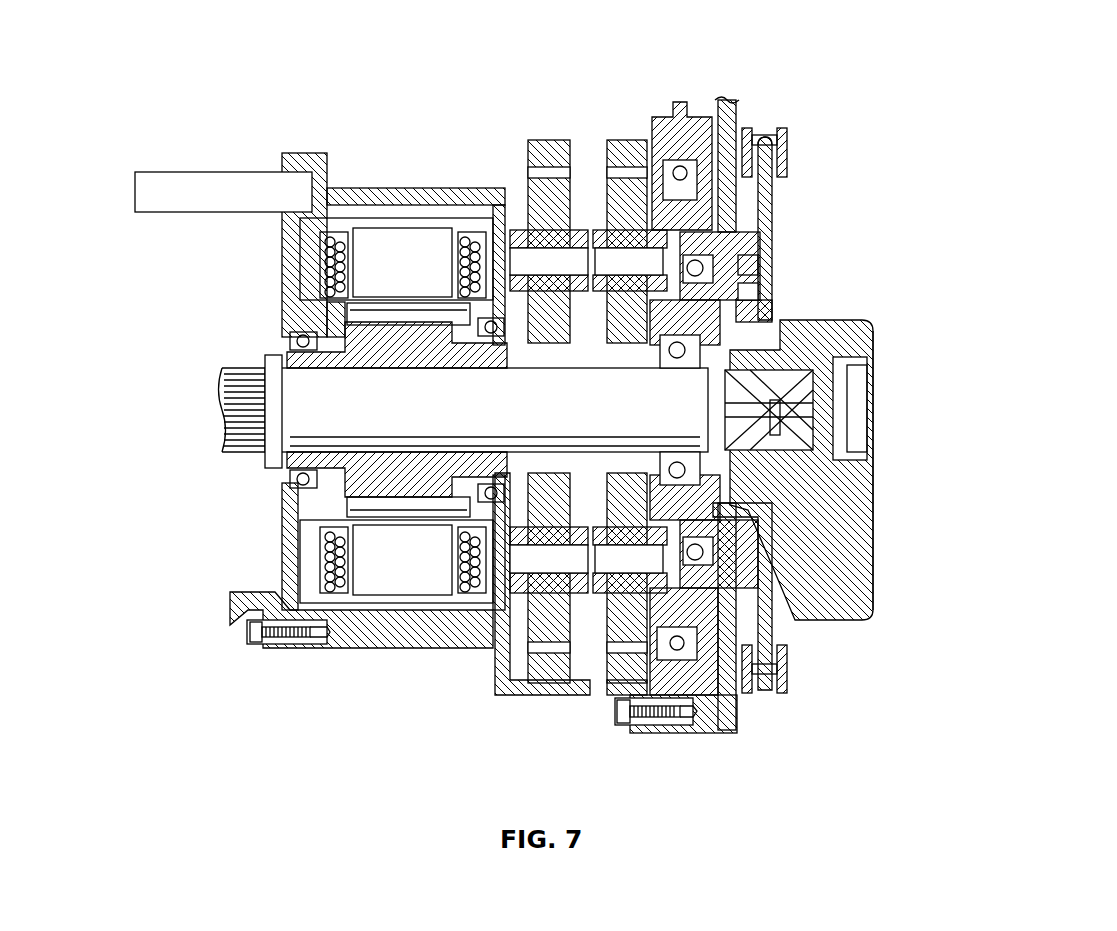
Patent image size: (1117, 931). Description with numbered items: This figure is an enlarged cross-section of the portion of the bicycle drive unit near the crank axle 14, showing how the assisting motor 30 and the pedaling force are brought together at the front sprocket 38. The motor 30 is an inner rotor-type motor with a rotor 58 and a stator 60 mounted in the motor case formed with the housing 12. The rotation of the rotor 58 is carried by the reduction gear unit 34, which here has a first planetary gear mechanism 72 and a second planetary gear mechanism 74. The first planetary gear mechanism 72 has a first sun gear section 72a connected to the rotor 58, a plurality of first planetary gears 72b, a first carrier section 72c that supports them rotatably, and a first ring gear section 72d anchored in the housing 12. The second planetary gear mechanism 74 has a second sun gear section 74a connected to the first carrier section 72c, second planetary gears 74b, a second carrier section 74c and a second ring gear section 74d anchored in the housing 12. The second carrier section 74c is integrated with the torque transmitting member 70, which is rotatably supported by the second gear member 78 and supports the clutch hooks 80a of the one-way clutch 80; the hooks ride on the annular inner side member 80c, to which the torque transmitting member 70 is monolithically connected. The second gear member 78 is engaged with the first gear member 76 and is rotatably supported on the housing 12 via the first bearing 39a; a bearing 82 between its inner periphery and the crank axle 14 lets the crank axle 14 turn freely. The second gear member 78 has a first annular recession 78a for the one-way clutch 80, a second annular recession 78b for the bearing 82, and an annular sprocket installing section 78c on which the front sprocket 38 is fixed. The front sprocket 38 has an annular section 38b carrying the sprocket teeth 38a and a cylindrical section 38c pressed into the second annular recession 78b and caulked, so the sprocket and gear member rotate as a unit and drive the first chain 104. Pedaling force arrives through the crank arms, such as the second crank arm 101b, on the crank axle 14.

The housing 12 is at (760, 142).
The crank axle 14 is at (300, 400).
The motor 30 is at (405, 630).
The reduction gear unit 34 is at (605, 770).
The front sprocket 38 is at (775, 265).
The sprocket teeth 38a is at (775, 140).
The annular section 38b is at (780, 285).
The cylindrical section 38c is at (860, 340).
The first bearing 39a is at (770, 290).
The rotor 58 is at (330, 300).
The stator 60 is at (430, 195).
The torque transmitting member 70 is at (770, 620).
The first planetary gear mechanism 72 is at (545, 670).
The first sun gear section 72a is at (517, 600).
The first planetary gears 72b is at (552, 170).
The first carrier section 72c is at (517, 235).
The first ring gear section 72d is at (545, 665).
The second planetary gear mechanism 74 is at (620, 670).
The second sun gear section 74a is at (840, 440).
The second planetary gears 74b is at (605, 175).
The second carrier section 74c is at (760, 580).
The second ring gear section 74d is at (640, 695).
The first gear member 76 is at (668, 115).
The second gear member 78 is at (740, 142).
The first annular recession 78a is at (745, 225).
The second annular recession 78b is at (760, 240).
The annular sprocket installing section 78c is at (760, 330).
The one-way clutch 80 is at (740, 700).
The clutch hook 80a is at (745, 150).
The inner side member 80c is at (785, 670).
The bearing 82 is at (855, 405).
The second crank arm 101b is at (870, 500).
The first chain 104 is at (790, 145).